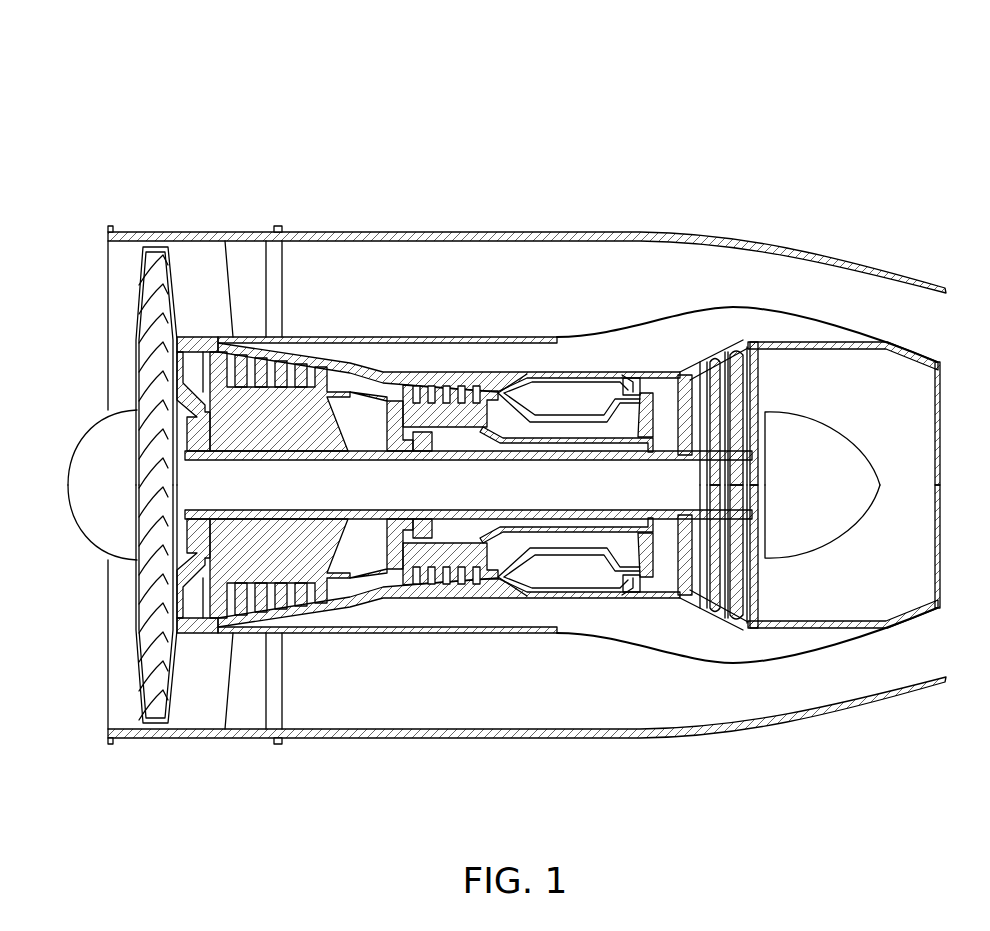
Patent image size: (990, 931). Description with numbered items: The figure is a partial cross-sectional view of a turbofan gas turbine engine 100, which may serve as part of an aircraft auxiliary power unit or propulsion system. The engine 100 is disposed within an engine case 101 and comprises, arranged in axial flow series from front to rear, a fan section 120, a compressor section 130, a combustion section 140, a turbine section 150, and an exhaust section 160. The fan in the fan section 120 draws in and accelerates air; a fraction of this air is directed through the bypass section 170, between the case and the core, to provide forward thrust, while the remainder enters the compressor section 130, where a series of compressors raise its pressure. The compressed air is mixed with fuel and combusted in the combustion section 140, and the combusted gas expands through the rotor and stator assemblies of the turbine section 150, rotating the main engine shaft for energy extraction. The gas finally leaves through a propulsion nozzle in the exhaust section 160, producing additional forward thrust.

The gas turbine engine 100 is at (504, 434).
The engine case 101 is at (342, 231).
The bypass section 170 is at (451, 258).
The fan section 120 is at (188, 770).
The compressor section 130 is at (191, 770).
The combustion section 140 is at (444, 770).
The turbine section 150 is at (760, 770).
The exhaust section 160 is at (890, 770).